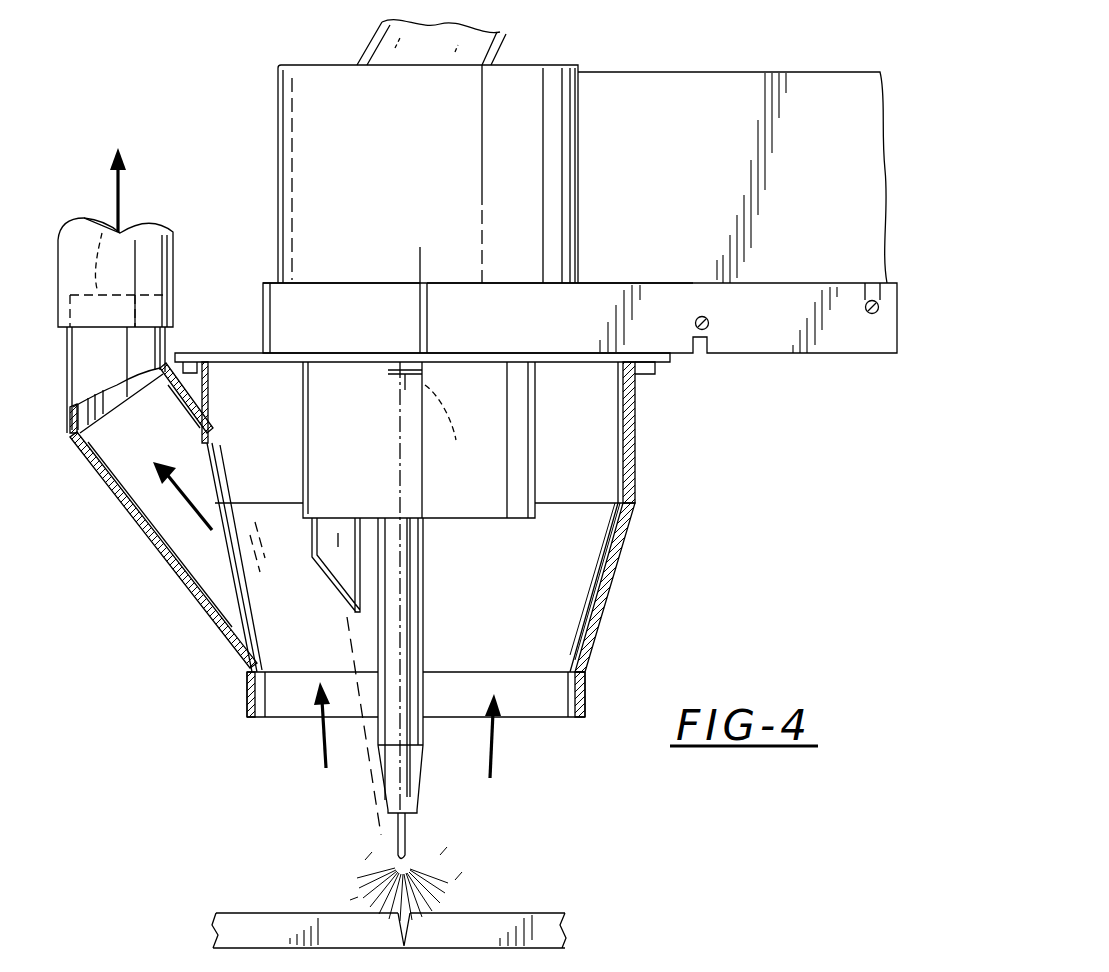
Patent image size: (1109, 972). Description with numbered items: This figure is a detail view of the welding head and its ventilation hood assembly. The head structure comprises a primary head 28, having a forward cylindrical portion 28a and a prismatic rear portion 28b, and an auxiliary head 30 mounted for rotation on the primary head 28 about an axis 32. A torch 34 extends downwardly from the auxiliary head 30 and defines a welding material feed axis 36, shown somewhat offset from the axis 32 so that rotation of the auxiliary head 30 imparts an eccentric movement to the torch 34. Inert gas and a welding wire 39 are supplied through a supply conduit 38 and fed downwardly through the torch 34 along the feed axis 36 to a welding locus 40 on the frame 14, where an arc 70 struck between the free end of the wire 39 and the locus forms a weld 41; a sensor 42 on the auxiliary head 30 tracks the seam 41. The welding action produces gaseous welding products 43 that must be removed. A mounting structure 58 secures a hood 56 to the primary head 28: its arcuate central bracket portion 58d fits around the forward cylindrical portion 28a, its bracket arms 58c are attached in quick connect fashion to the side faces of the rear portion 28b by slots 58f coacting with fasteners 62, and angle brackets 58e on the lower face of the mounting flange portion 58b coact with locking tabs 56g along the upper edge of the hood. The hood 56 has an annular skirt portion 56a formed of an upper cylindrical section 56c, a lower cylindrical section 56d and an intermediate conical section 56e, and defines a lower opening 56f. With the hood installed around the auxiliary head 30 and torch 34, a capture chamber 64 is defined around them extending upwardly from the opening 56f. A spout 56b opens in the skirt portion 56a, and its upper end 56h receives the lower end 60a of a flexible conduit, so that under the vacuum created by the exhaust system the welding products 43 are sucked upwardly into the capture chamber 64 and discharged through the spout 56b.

The frame 14 is at (236, 913).
The primary head 28 is at (529, 173).
The forward cylindrical portion 28a is at (428, 161).
The prismatic rear portion 28b is at (675, 131).
The auxiliary head 30 is at (303, 478).
The axis 32 is at (460, 430).
The torch 34 is at (388, 688).
The welding material feed axis 36 is at (400, 660).
The supply conduit 38 is at (496, 52).
The welding wire 39 is at (396, 838).
The welding locus 40 is at (448, 907).
The weld 41 is at (400, 946).
The sensor 42 is at (333, 590).
The gaseous welding products 43 is at (466, 870).
The hood 56 is at (640, 560).
The skirt portion 56a is at (640, 497).
The spout 56b is at (160, 565).
The upper cylindrical section 56c is at (636, 443).
The lower cylindrical section 56d is at (585, 700).
The intermediate conical section 56e is at (604, 620).
The lower opening 56f is at (275, 690).
The locking tabs 56g is at (656, 372).
The upper end of spout 56h is at (102, 233).
The mounting structure 58 is at (638, 283).
The mounting flange portion 58b is at (514, 328).
The bracket arms 58c is at (729, 965).
The arcuate central bracket portion 58d is at (352, 283).
The angle brackets 58e is at (396, 376).
The slots 58f is at (560, 971).
The lower end of conduit 60a is at (174, 262).
The fasteners 62 is at (708, 323).
The capture chamber 64 is at (303, 601).
The arc 70 is at (395, 882).